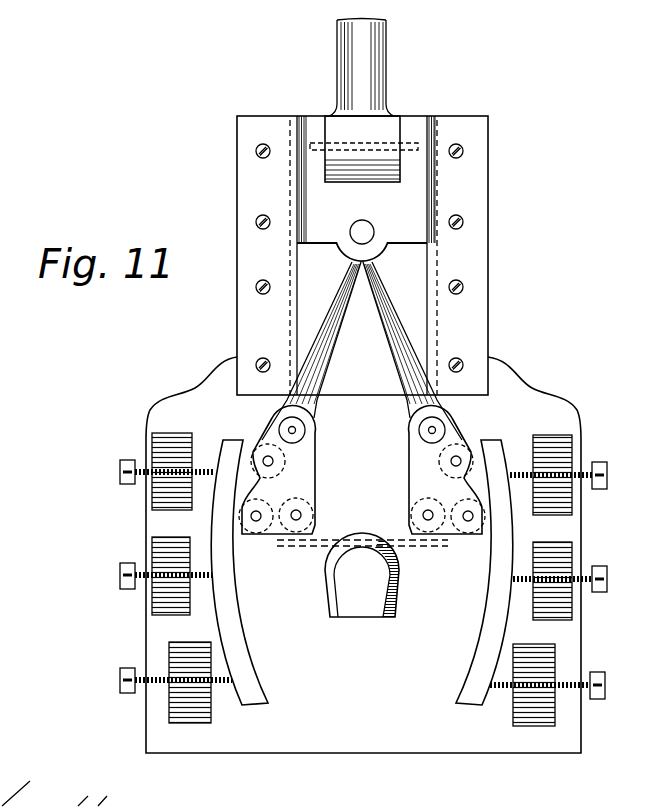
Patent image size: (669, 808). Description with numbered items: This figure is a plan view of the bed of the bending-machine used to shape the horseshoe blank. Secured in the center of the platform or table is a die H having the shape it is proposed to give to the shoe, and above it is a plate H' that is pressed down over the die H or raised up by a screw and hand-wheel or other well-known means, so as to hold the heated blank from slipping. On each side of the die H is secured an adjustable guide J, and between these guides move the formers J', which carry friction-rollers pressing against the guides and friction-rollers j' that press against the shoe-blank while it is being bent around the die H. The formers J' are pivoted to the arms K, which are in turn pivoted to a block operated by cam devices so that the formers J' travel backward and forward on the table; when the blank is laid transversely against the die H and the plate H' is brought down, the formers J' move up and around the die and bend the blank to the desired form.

The plate H' is at (362, 188).
The arms K is at (362, 351).
The formers J' is at (362, 470).
The friction-rollers j' is at (362, 475).
The adjustable guide J is at (361, 572).
The die H is at (362, 575).